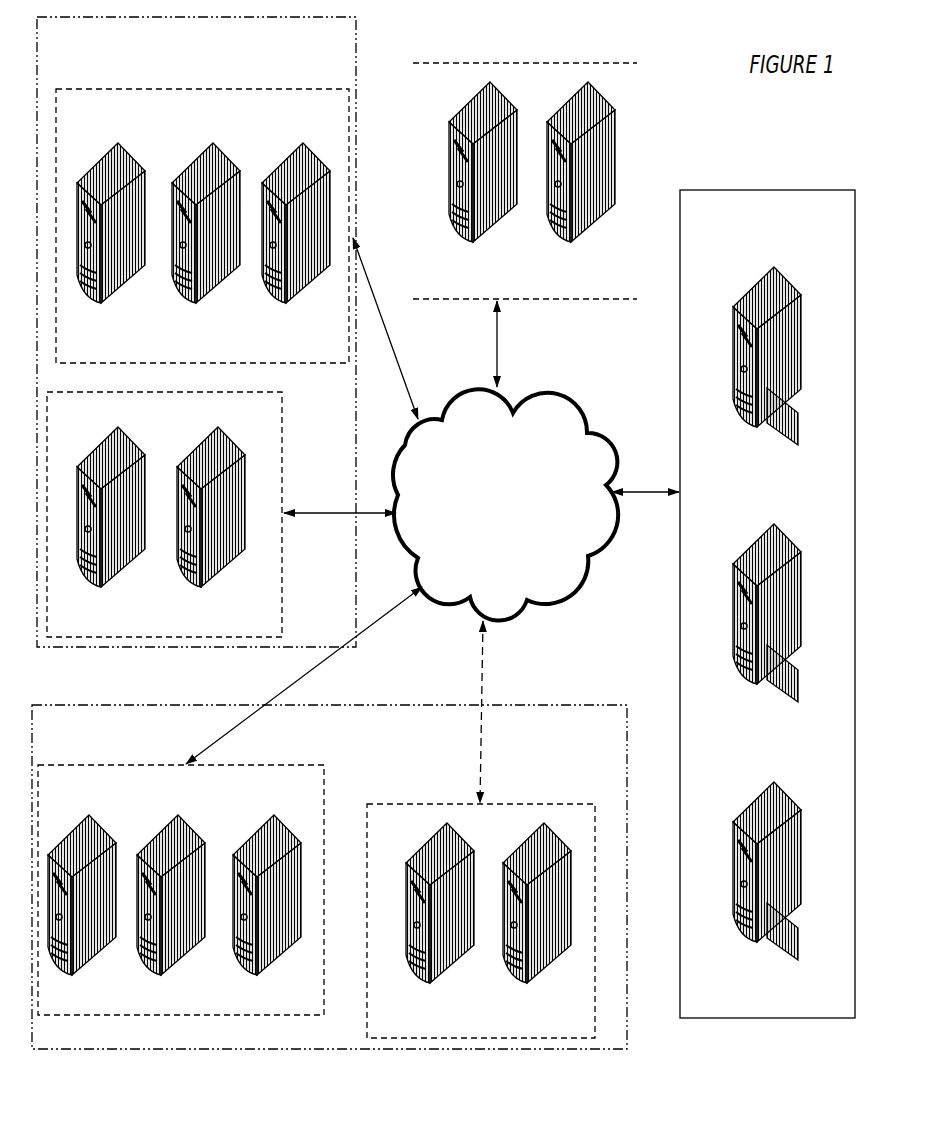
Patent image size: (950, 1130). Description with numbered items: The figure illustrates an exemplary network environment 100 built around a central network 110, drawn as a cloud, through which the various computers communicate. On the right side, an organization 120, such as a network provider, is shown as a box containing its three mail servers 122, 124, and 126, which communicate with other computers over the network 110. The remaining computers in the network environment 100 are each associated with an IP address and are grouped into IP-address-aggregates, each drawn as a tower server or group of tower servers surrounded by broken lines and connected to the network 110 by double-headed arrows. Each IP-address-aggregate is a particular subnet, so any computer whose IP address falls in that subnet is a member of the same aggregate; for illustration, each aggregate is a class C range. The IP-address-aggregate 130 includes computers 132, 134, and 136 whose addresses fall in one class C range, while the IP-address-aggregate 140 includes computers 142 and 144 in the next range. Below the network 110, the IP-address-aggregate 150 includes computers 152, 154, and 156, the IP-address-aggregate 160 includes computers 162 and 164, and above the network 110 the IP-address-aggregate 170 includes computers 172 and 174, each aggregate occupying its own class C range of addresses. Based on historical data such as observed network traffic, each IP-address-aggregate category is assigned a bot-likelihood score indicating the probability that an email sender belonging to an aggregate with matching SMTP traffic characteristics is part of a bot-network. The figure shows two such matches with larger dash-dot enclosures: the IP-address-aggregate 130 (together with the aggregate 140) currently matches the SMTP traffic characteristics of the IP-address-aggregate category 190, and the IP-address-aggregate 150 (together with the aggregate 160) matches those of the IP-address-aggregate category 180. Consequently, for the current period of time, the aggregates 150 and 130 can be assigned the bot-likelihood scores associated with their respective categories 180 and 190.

The network environment 100 is at (706, 128).
The network 110 is at (505, 504).
The organization 120 is at (767, 604).
The mail server 122 is at (767, 364).
The mail server 124 is at (767, 621).
The mail server 126 is at (767, 879).
The IP-address-aggregate 130 is at (202, 226).
The computer 132 is at (111, 240).
The computer 134 is at (206, 240).
The computer 136 is at (296, 240).
The IP-address-aggregate 140 is at (164, 514).
The computer 142 is at (111, 524).
The computer 144 is at (211, 524).
The IP-address-aggregate 150 is at (181, 890).
The computer 152 is at (82, 912).
The computer 154 is at (171, 912).
The computer 156 is at (267, 912).
The IP-address-aggregate 160 is at (481, 921).
The computer 162 is at (440, 920).
The computer 164 is at (537, 920).
The IP-address-aggregate 170 is at (525, 181).
The computer 172 is at (483, 180).
The computer 174 is at (581, 180).
The IP-address-aggregate category 180 is at (329, 877).
The IP-address-aggregate category 190 is at (196, 332).